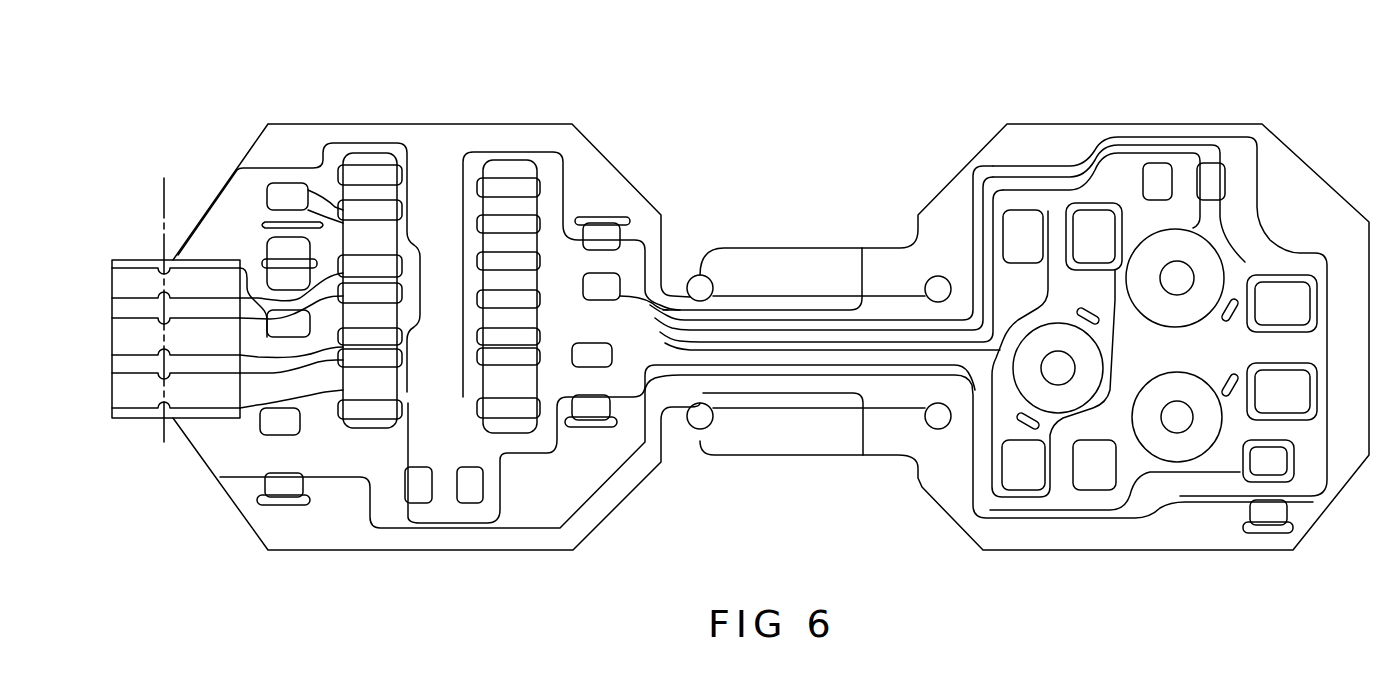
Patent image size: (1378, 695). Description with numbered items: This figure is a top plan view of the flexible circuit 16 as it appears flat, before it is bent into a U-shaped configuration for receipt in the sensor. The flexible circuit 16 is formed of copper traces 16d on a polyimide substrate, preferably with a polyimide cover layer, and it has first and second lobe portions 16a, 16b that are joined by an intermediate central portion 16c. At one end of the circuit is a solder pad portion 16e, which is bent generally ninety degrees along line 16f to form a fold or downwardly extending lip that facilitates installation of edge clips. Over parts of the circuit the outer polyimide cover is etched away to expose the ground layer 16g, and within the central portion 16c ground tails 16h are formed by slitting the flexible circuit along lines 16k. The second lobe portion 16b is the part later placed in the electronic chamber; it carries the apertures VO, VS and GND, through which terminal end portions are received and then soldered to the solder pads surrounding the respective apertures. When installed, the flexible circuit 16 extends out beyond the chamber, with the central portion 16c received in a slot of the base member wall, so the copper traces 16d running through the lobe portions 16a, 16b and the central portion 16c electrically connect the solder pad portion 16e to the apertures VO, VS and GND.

The flexible circuit 16 is at (322, 120).
The first lobe portion 16a is at (317, 552).
The second lobe portion 16b is at (1060, 553).
The intermediate central portion 16c is at (668, 290).
The copper traces 16d is at (917, 366).
The solder pad portion 16e is at (143, 423).
The bend line 16f is at (163, 215).
The ground layer 16g is at (447, 135).
The ground tails 16h is at (776, 275).
The slit lines 16k is at (750, 406).
The aperture VO is at (1049, 353).
The aperture VS is at (1190, 263).
The aperture GND is at (1177, 434).